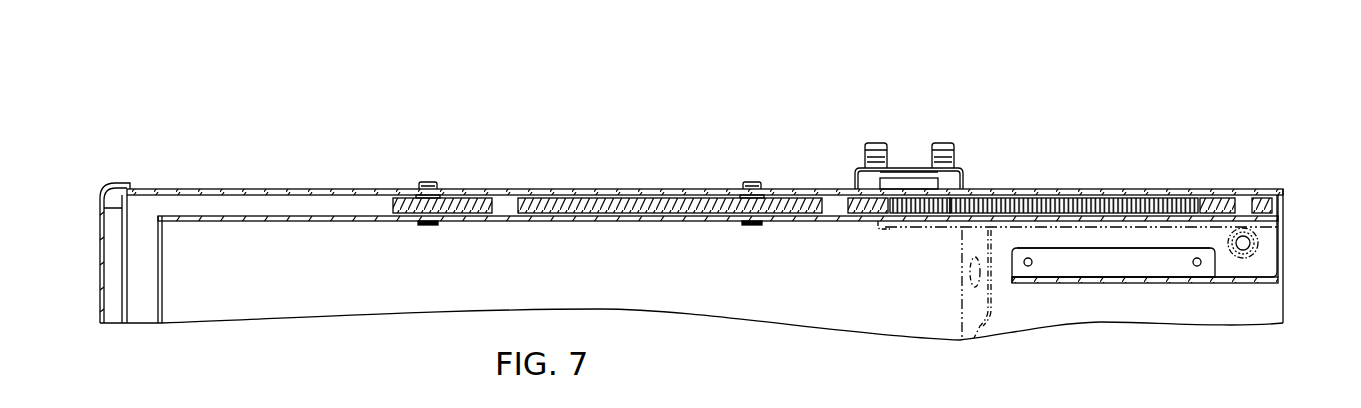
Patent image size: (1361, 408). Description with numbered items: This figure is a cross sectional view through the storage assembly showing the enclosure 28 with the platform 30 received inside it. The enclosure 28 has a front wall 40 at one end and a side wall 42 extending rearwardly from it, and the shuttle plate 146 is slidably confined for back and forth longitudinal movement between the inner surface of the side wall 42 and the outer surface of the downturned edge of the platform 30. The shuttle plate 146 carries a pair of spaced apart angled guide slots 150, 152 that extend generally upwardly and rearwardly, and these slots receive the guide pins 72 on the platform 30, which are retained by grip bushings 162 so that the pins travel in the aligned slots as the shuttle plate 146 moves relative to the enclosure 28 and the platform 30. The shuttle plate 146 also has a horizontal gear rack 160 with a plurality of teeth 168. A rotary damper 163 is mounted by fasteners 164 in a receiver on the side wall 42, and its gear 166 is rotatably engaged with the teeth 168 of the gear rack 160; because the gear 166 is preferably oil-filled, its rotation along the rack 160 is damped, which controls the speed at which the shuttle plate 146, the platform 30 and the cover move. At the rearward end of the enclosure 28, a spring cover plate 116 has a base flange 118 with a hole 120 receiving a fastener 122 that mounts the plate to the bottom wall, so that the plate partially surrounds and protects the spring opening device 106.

The enclosure 28 is at (584, 186).
The platform 30 is at (831, 322).
The front wall 40 is at (100, 268).
The side wall 42 is at (272, 189).
The guide pin 72 is at (431, 182).
The spring opening device 106 is at (1258, 246).
The spring cover plate 116 is at (1142, 283).
The base flange 118 is at (1180, 270).
The hole 120 is at (1032, 259).
The fastener 122 is at (1027, 267).
The shuttle plate 146 is at (638, 207).
The angled guide slot 150 is at (491, 213).
The angled guide slot 152 is at (822, 213).
The gear rack 160 is at (1118, 200).
The grip bushing 162 is at (440, 189).
The rotary damper 163 is at (964, 178).
The fastener 164 is at (943, 143).
The gear 166 is at (913, 210).
The teeth 168 is at (1066, 207).